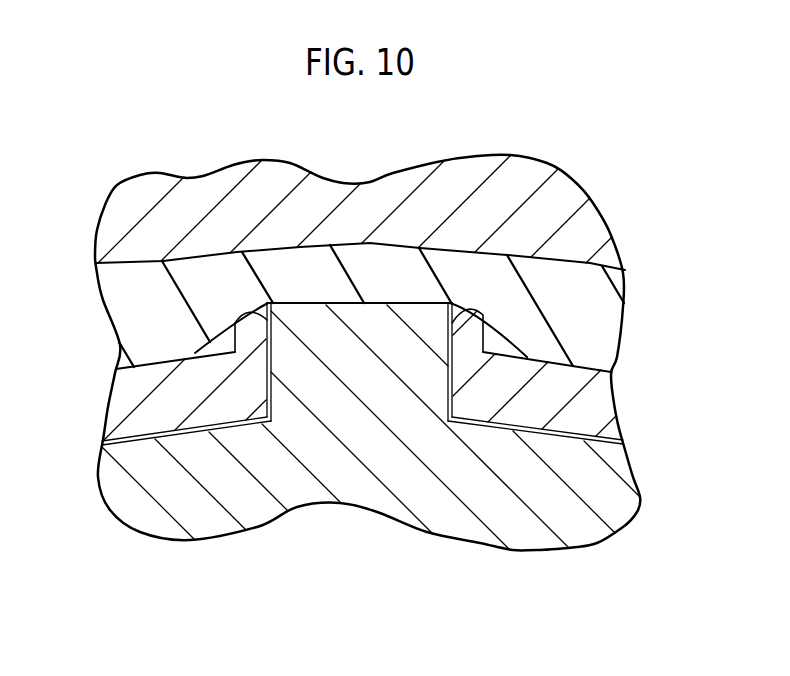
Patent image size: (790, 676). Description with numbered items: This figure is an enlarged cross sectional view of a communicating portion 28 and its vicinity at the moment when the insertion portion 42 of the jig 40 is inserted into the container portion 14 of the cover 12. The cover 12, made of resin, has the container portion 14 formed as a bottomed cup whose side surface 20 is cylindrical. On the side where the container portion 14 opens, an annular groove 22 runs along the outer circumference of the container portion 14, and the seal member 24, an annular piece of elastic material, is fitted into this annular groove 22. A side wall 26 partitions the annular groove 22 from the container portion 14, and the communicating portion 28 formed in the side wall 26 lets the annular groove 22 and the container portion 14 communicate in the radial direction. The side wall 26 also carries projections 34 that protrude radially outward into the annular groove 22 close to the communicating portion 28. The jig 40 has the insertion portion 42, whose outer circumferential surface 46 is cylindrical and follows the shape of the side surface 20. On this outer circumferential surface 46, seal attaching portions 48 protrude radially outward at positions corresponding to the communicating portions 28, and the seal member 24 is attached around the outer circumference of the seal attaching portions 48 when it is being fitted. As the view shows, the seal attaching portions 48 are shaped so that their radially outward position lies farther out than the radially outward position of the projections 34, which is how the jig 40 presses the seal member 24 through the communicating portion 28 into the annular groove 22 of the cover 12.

The cover 12 is at (546, 153).
The seal member 24 is at (290, 265).
The seal attaching portion 48 is at (363, 300).
The annular groove 22 is at (227, 340).
The projection 34 is at (469, 330).
The side wall 26 is at (160, 405).
The communicating portion 28 is at (273, 358).
The side surface 20 is at (483, 420).
The container portion 14 is at (567, 433).
The outer circumferential surface 46 is at (525, 430).
The jig 40 is at (518, 560).
The insertion portion 42 is at (617, 507).